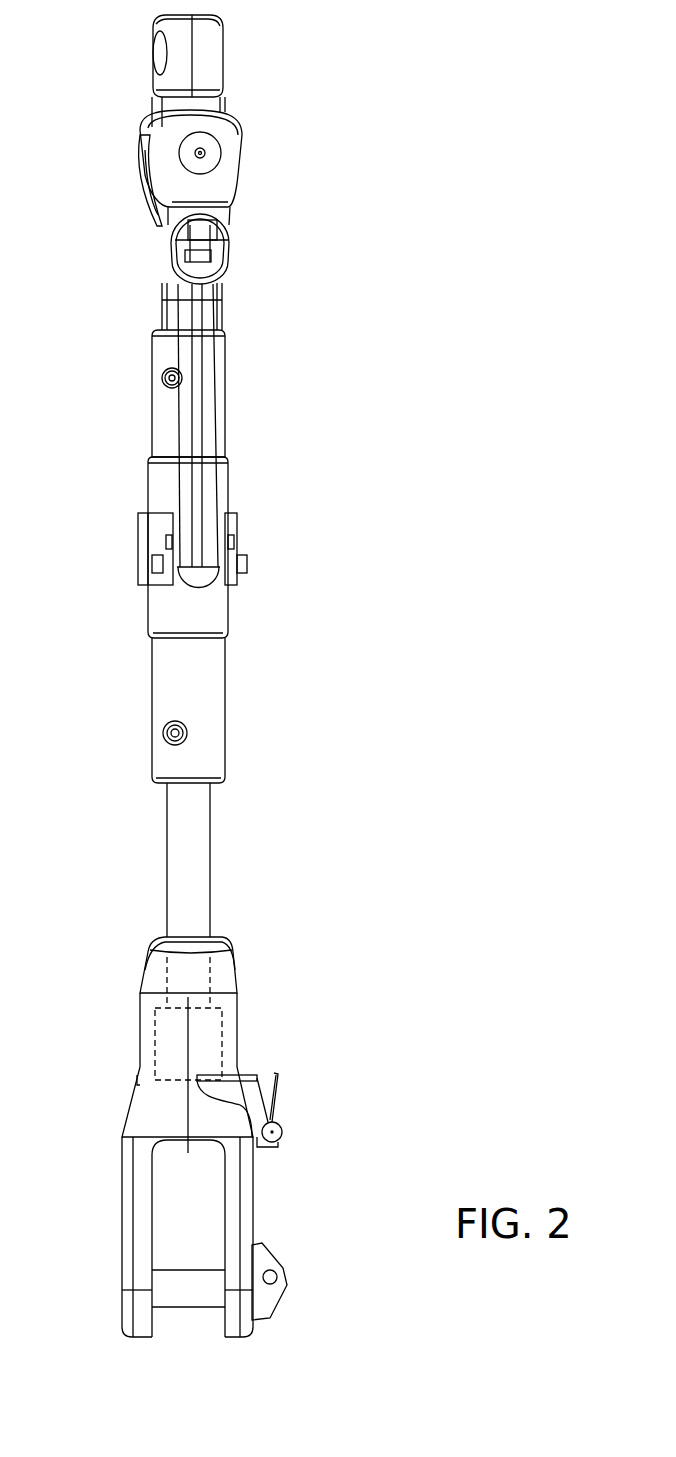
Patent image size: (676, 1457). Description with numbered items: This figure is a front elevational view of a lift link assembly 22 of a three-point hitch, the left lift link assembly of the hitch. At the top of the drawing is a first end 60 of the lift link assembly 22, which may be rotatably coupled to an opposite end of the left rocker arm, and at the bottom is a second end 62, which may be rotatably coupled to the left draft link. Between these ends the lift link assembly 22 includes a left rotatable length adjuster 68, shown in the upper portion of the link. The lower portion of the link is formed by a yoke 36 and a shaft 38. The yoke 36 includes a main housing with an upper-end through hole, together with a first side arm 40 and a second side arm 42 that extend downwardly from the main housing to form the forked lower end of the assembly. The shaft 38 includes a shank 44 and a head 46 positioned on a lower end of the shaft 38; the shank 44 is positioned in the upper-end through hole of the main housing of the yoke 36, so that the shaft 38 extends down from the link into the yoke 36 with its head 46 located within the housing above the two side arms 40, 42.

The left lift link assembly 22 is at (427, 592).
The yoke 36 is at (300, 972).
The shaft 38 is at (253, 832).
The first side arm 40 is at (142, 1338).
The second side arm 42 is at (233, 1338).
The shank 44 is at (210, 900).
The head 46 is at (188, 1153).
The first end 60 is at (210, 50).
The second end 62 is at (122, 1280).
The left rotatable length adjuster 68 is at (258, 483).